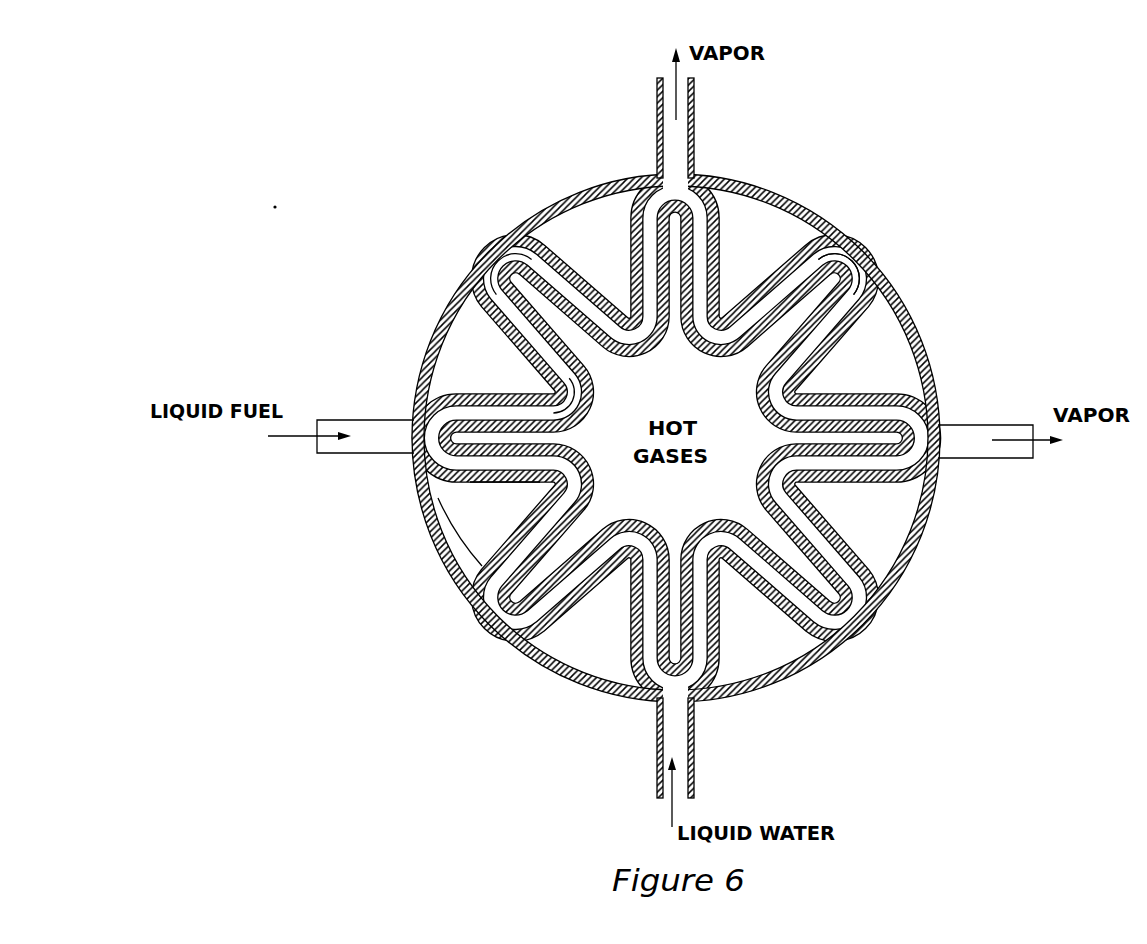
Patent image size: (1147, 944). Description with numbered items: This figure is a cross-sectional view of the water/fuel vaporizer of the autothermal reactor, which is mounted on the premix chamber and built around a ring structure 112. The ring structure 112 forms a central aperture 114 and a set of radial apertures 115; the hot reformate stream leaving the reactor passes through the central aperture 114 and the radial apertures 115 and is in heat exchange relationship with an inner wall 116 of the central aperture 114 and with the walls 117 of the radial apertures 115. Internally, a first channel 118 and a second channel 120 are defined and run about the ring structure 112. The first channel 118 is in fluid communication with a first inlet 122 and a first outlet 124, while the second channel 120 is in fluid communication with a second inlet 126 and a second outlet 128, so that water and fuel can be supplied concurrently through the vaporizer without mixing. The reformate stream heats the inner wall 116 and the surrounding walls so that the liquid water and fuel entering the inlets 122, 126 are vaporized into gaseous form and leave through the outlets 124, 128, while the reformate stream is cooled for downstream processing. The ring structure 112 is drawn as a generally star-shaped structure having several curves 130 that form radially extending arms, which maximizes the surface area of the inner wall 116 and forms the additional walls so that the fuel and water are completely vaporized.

The ring structure 112 is at (924, 309).
The central aperture 114 is at (613, 507).
The radial apertures 115 is at (470, 550).
The inner wall 116 is at (590, 380).
The walls of the radial apertures 117 is at (460, 487).
The first channel 118 is at (857, 273).
The second channel 120 is at (900, 236).
The first inlet 122 is at (694, 746).
The first outlet 124 is at (997, 460).
The second inlet 126 is at (346, 456).
The second outlet 128 is at (695, 124).
The curves 130 is at (613, 287).